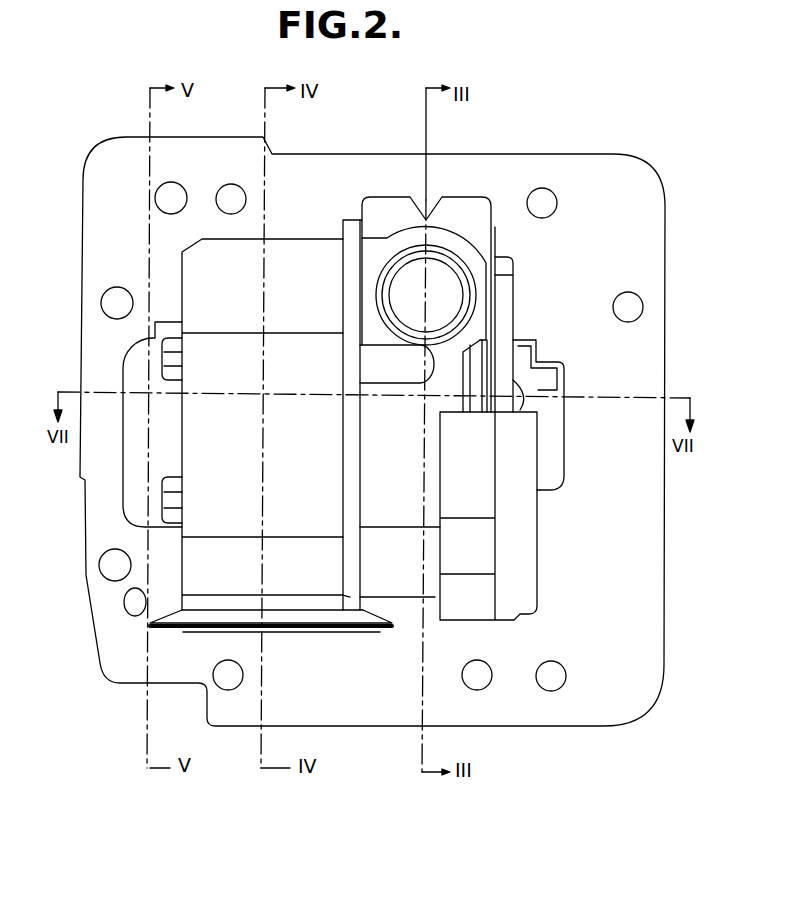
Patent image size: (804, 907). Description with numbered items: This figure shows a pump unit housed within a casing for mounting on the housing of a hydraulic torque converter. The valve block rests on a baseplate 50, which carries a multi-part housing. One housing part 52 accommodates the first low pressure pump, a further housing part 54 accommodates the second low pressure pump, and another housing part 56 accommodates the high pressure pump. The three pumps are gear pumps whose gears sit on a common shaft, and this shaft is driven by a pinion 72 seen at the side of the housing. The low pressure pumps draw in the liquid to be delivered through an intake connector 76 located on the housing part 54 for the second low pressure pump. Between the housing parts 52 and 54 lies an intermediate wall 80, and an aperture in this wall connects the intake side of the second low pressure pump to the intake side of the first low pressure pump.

The baseplate 50 is at (598, 175).
The housing part 52 is at (399, 456).
The housing part 54 is at (306, 456).
The housing part 56 is at (176, 456).
The pinion 72 is at (502, 315).
The intake connector 76 is at (317, 613).
The intermediate wall 80 is at (352, 230).